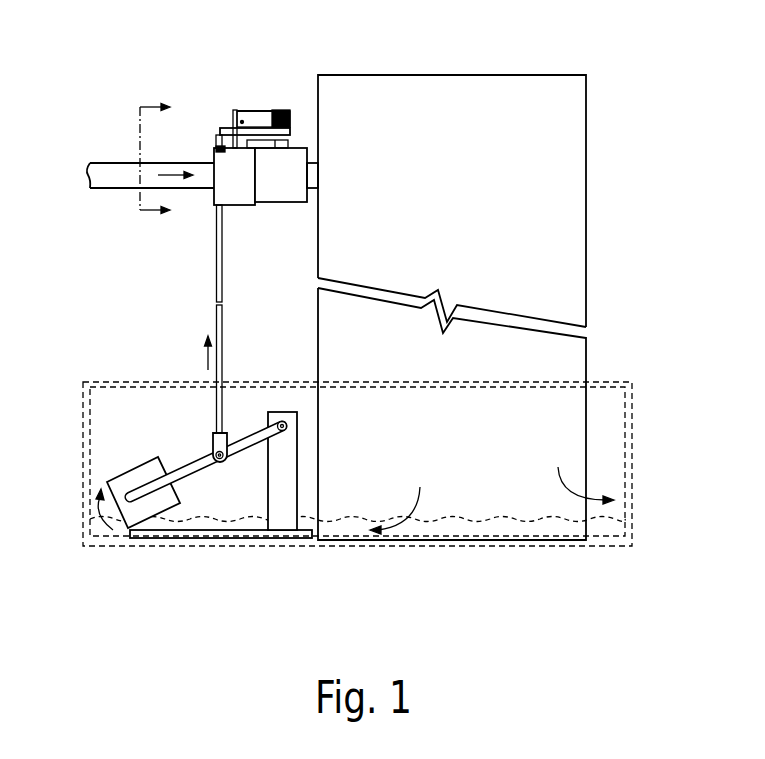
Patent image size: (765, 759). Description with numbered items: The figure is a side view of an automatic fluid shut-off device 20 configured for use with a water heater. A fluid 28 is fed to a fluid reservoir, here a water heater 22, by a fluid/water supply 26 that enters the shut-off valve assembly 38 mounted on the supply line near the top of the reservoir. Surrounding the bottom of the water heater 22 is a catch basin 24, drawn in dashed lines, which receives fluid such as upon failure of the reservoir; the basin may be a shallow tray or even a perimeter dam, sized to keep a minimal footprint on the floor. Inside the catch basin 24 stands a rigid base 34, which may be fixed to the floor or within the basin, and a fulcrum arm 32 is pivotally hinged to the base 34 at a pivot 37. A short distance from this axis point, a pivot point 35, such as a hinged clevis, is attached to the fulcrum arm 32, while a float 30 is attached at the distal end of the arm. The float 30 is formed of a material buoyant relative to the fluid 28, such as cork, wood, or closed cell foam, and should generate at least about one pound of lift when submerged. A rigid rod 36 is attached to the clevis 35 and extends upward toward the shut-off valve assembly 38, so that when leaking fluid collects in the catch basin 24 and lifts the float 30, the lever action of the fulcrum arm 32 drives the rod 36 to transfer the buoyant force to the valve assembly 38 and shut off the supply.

The automatic fluid shut-off device 20 is at (114, 106).
The water heater 22 is at (587, 247).
The catch basin 24 is at (632, 428).
The fluid/water supply 26 is at (128, 190).
The fluid 28 is at (632, 530).
The float 30 is at (136, 465).
The fulcrum arm 32 is at (198, 457).
The base 34 is at (268, 507).
The pivot point 35 is at (224, 459).
The rod 36 is at (217, 318).
The pivot 37 is at (287, 425).
The shut-off valve assembly 38 is at (223, 130).